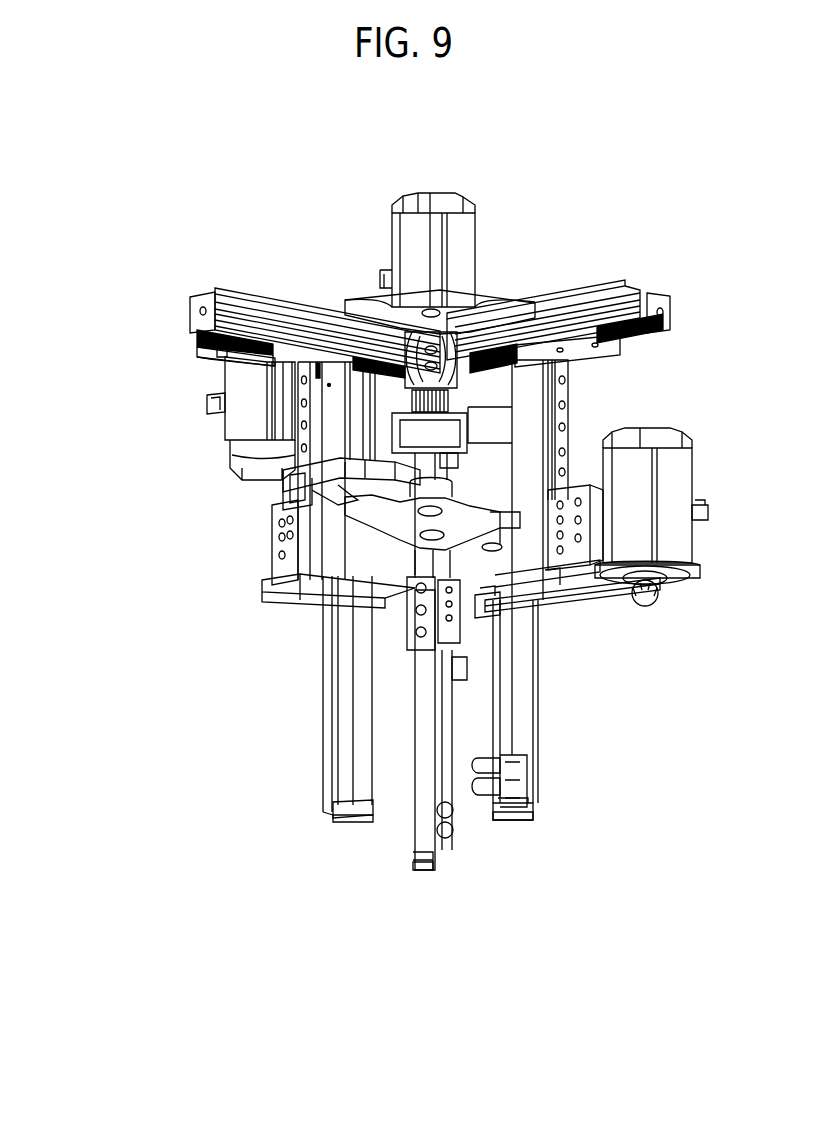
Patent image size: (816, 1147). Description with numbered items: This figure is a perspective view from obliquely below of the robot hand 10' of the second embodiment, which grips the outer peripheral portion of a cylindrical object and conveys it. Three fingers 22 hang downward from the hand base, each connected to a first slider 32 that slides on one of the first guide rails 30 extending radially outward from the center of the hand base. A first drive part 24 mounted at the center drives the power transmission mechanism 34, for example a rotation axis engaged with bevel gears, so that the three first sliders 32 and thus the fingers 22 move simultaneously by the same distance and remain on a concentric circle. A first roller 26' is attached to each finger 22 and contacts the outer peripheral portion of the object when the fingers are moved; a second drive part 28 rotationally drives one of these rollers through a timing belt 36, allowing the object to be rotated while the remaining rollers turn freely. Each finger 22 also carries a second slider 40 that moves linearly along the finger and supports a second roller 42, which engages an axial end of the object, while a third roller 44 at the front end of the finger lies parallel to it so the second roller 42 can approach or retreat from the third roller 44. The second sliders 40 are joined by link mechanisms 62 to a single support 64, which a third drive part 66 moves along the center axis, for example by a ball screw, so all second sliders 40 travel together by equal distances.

The robot hand 10' is at (89, 458).
The fingers 22 is at (367, 830).
The first drive part 24 is at (470, 243).
The first rollers 26' is at (437, 615).
The second drive part 28 is at (636, 470).
The first guide rails 30 is at (238, 353).
The first slider 32 is at (278, 350).
The power transmission mechanism 34 is at (470, 385).
The timing belt 36 is at (600, 607).
The second slider 40 is at (283, 538).
The second roller 42 is at (507, 755).
The third roller 44 is at (505, 798).
The link mechanism 62 is at (305, 478).
The support 64 is at (458, 515).
The third drive part 66 is at (242, 417).